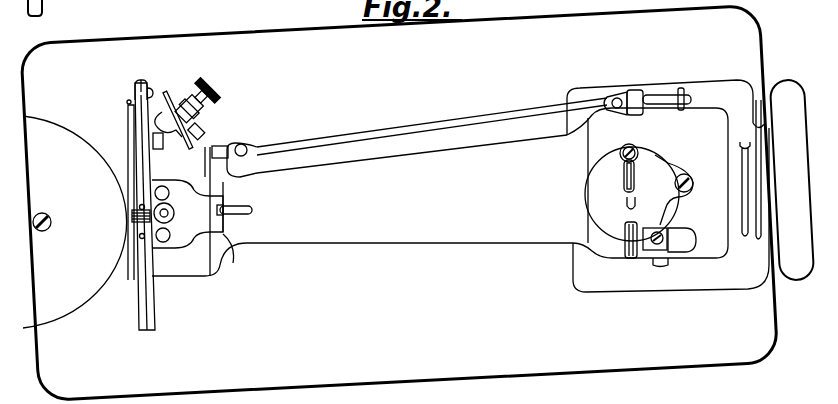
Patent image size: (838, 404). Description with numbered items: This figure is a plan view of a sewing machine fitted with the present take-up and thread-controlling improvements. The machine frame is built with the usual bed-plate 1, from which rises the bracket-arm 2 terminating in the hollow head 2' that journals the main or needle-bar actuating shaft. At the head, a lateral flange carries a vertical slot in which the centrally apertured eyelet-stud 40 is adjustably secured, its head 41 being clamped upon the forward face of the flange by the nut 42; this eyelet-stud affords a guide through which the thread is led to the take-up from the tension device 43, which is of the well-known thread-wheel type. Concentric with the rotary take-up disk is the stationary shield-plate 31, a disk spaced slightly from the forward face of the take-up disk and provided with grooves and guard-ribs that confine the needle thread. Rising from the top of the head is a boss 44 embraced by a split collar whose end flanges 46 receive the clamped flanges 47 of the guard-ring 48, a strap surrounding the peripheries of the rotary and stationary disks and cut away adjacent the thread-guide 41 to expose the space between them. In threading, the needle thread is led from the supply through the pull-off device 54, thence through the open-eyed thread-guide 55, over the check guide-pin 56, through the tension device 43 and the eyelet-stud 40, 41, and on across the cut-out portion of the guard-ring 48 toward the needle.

The bed-plate 1 is at (399, 202).
The bracket-arm 2 is at (651, 285).
The hollow head 2′ is at (197, 265).
The stationary shield-plate 31 is at (130, 125).
The eyelet-stud 40 is at (127, 103).
The head 41 is at (137, 87).
The nut 42 is at (152, 91).
The tension device 43 is at (200, 128).
The boss 44 is at (175, 213).
The end flanges 46 is at (134, 217).
The flanges 47 is at (139, 208).
The guard-ring 48 is at (137, 192).
The pull-off device 54 is at (634, 182).
The open-eyed thread-guide 55 is at (252, 201).
The check guide-pin 56 is at (169, 136).